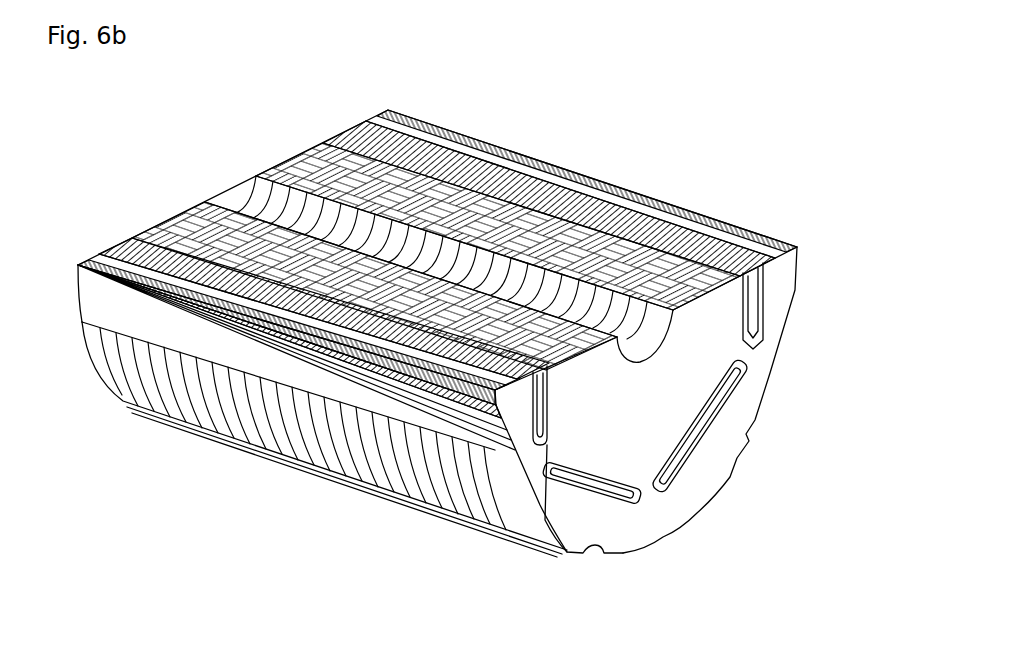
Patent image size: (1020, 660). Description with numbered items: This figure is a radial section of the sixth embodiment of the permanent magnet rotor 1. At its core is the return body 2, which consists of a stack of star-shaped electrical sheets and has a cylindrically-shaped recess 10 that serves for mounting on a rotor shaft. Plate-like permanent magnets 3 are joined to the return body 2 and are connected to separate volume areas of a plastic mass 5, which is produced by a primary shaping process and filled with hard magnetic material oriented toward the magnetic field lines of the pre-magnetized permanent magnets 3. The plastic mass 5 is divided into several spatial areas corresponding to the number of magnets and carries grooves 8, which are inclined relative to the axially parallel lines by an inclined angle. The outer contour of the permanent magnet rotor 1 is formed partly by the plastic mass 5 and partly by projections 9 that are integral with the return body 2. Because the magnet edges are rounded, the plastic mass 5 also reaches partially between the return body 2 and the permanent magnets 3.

The permanent magnet rotor 1 is at (726, 152).
The return body 2 is at (350, 409).
The permanent magnets 3 is at (640, 235).
The plastic mass 5 is at (832, 253).
The grooves 8 is at (571, 180).
The projections 9 is at (770, 362).
The cylindrically-shaped recess 10 is at (262, 202).